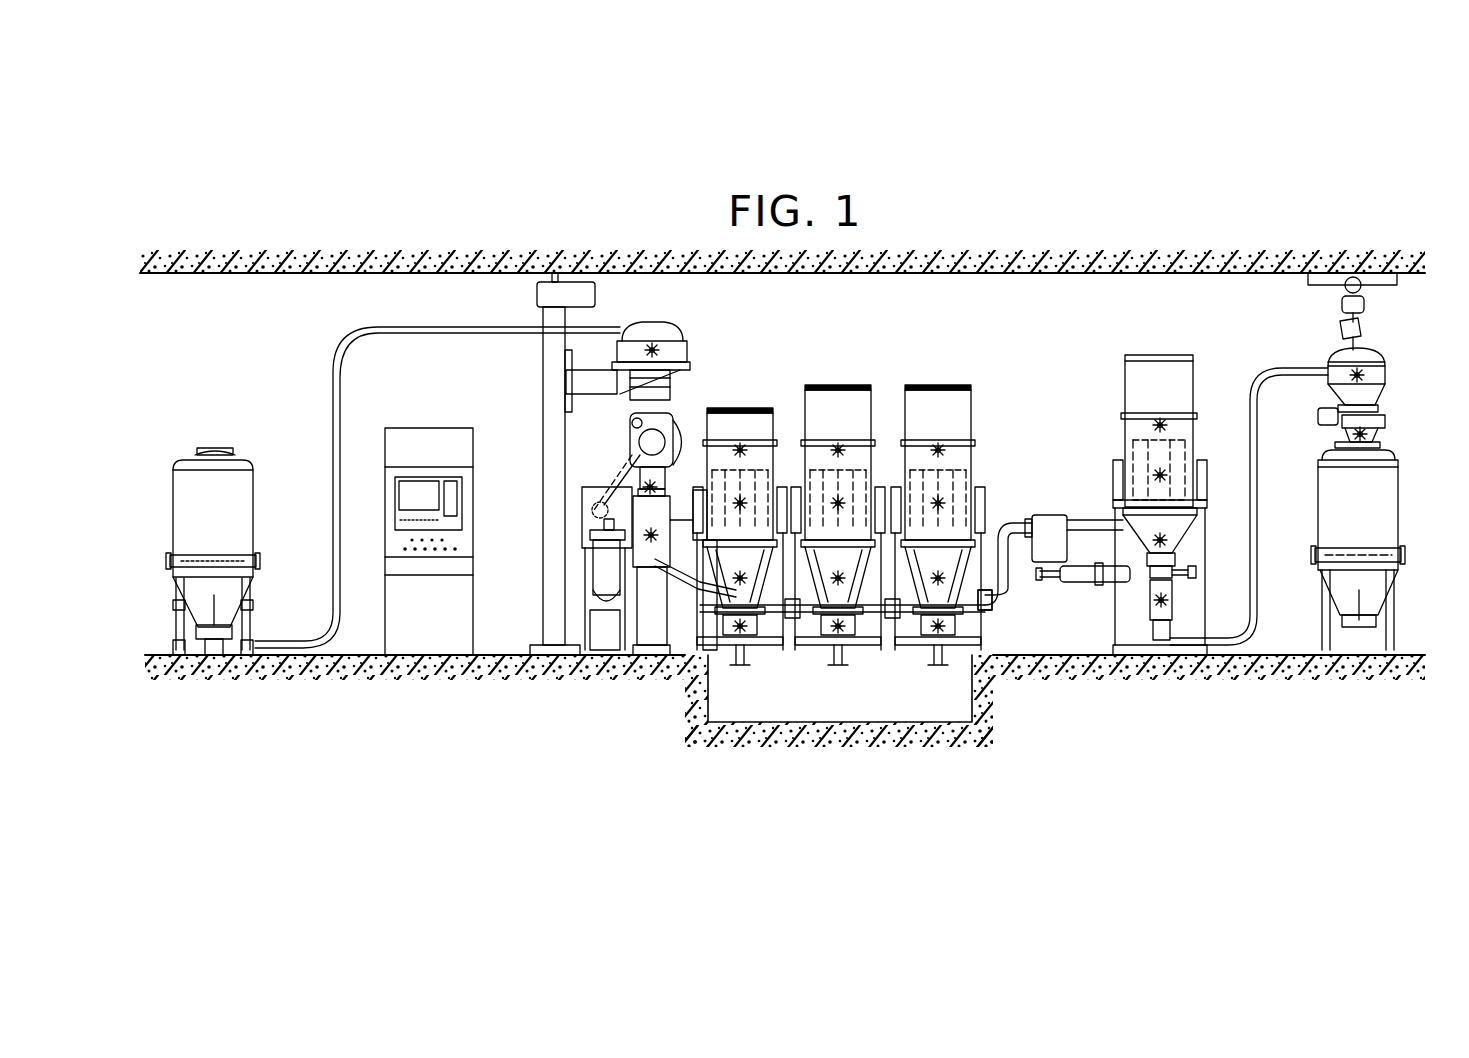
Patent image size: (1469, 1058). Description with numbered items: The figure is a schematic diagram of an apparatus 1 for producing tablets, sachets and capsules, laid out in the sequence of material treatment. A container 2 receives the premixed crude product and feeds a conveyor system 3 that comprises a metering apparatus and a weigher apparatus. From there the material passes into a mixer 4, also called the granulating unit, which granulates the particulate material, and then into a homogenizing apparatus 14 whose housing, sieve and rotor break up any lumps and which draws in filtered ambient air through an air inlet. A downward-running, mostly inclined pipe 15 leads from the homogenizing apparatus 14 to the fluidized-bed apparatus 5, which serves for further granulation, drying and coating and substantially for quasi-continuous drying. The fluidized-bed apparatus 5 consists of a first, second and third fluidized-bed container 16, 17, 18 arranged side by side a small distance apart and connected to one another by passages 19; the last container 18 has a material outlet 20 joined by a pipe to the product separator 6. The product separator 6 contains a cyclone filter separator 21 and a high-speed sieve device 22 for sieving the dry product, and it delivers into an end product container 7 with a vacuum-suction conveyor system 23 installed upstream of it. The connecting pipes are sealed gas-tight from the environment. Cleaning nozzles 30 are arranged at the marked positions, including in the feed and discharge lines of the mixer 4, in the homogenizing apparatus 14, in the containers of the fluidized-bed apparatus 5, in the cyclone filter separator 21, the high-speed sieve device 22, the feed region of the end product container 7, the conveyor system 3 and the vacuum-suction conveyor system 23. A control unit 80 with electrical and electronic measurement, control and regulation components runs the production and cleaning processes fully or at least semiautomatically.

The apparatus 1 is at (596, 682).
The container 2 is at (175, 538).
The conveyor system 3 is at (688, 354).
The mixer 4 is at (679, 428).
The fluidized-bed apparatus 5 is at (842, 386).
The product separator 6 is at (1152, 354).
The end product container 7 is at (1401, 506).
The homogenizing apparatus 14 is at (655, 572).
The pipe 15 is at (680, 552).
The first fluidized-bed container 16 is at (775, 442).
The second fluidized-bed container 17 is at (874, 442).
The third fluidized-bed container 18 is at (978, 442).
The passages 19 is at (792, 614).
The material outlet 20 is at (983, 608).
The cyclone filter separator 21 is at (1195, 390).
The high-speed sieve device 22 is at (1180, 635).
The vacuum-suction conveyor system 23 is at (1388, 378).
The cleaning nozzles 30 is at (650, 348).
The control unit 80 is at (385, 618).